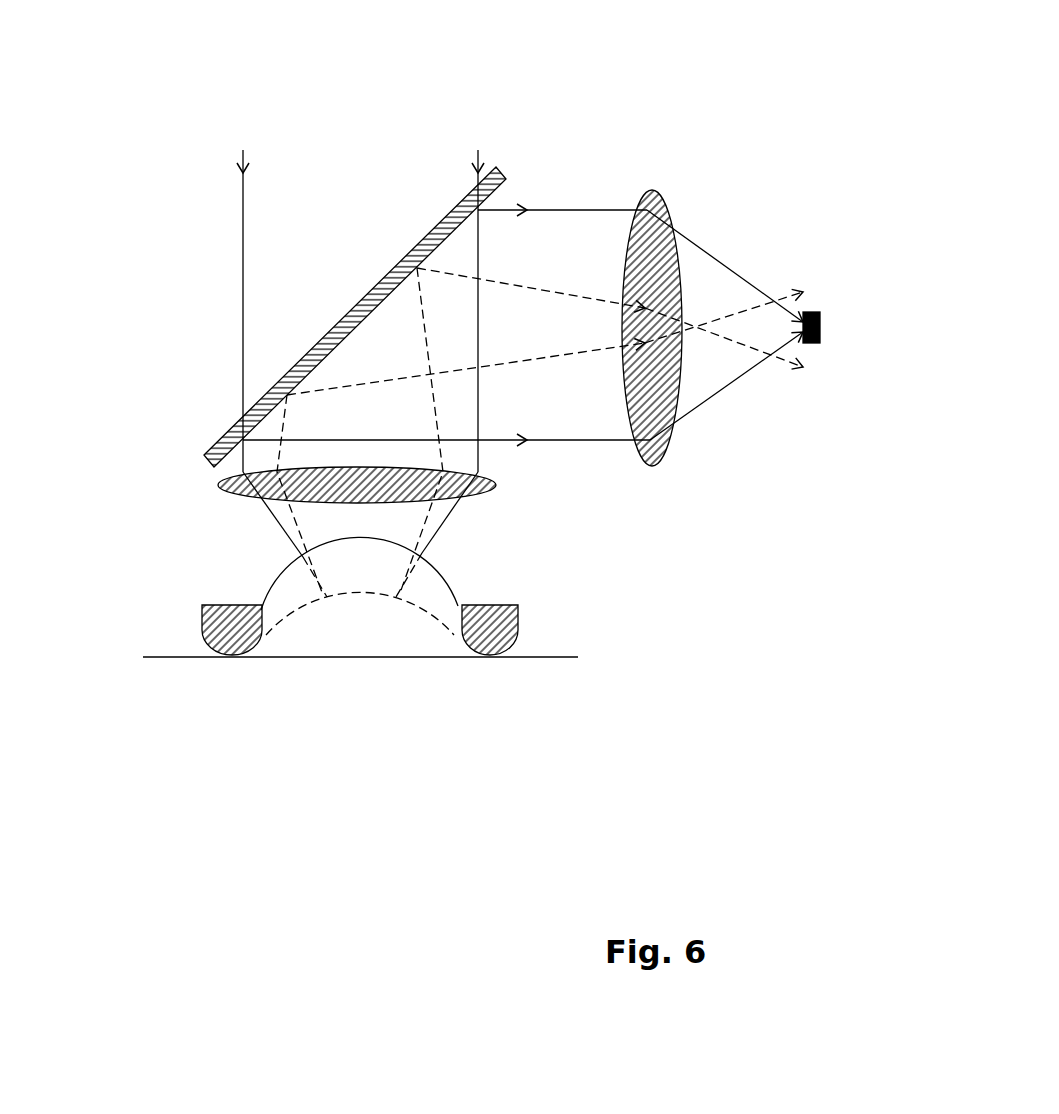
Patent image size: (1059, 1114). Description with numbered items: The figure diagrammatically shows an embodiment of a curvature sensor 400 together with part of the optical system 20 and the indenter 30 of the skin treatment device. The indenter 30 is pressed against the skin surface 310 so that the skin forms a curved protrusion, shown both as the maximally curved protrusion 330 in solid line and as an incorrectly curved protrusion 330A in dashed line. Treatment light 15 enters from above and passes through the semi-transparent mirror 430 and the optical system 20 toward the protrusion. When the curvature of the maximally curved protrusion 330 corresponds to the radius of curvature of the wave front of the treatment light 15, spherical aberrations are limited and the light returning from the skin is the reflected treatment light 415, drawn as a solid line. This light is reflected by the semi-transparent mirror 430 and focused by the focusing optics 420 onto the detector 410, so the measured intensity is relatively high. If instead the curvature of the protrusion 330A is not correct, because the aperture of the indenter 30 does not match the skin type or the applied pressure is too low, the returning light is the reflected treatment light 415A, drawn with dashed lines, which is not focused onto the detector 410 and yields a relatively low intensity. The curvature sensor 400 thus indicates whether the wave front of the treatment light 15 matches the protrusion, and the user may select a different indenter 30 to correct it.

The curvature sensor 400 is at (712, 42).
The treatment light 15 is at (243, 275).
The semi-transparent mirror 430 is at (502, 182).
The reflected treatment light 415 is at (593, 211).
The reflected treatment light 415A is at (571, 355).
The focusing optics 420 is at (660, 462).
The detector 410 is at (817, 312).
The optical system 20 is at (495, 488).
The maximally curved protrusion 330 is at (272, 576).
The curved protrusion 330A is at (421, 604).
The indenter 30 is at (518, 608).
The skin surface 310 is at (154, 645).